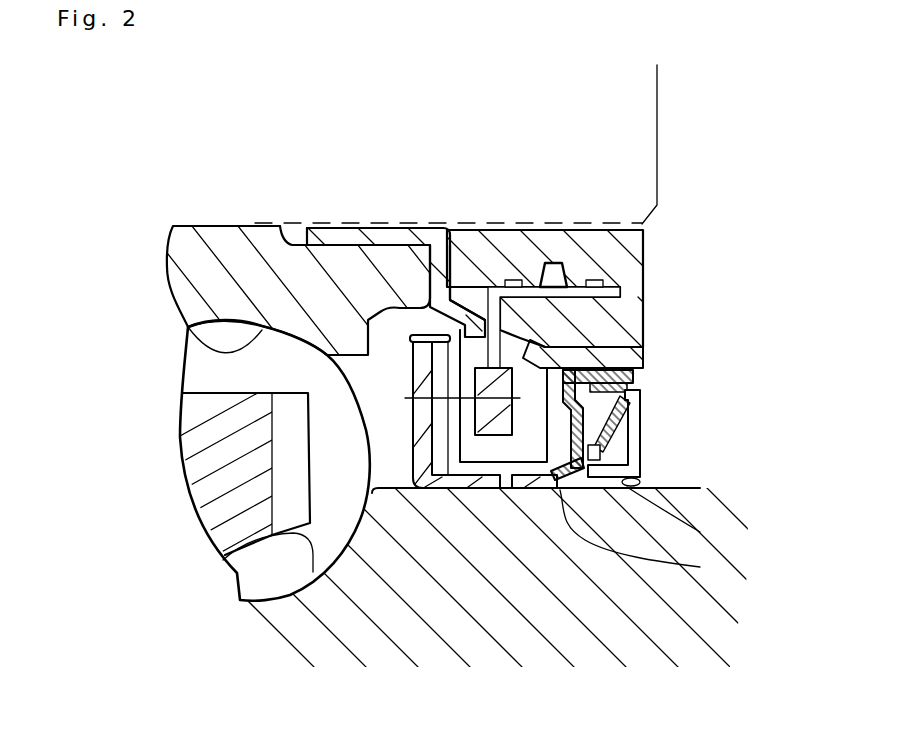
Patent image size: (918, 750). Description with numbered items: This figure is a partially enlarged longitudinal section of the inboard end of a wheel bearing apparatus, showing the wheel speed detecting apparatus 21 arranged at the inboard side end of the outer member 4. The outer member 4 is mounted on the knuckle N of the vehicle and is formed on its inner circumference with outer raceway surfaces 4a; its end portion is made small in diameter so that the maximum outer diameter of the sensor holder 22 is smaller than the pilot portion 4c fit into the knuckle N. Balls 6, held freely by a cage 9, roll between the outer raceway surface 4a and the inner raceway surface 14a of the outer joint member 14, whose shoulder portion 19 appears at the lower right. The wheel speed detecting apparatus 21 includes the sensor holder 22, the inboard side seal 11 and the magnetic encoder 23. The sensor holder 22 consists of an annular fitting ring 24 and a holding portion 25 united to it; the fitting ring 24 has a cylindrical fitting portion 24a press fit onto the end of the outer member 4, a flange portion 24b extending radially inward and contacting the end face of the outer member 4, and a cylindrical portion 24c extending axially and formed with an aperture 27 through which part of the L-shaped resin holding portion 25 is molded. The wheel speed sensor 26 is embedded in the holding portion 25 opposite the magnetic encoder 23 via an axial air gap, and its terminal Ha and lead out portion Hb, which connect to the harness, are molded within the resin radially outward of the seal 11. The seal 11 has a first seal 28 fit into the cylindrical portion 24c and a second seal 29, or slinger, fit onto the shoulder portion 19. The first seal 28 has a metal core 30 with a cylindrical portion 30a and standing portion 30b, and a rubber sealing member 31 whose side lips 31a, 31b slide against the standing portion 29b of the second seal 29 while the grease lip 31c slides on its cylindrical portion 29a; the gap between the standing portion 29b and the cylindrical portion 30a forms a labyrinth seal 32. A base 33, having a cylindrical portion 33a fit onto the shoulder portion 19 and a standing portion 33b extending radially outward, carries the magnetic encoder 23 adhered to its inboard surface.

The outer member 4 is at (305, 246).
The outer raceway surface 4a is at (188, 335).
The pilot portion 4c is at (253, 227).
The rolling element (ball) 6 is at (237, 367).
The cage 9 is at (243, 432).
The inboard side seal 11 is at (701, 385).
The outer joint member 14 is at (328, 638).
The inner raceway surface 14a is at (217, 576).
The shoulder portion 19 is at (580, 585).
The wheel speed detecting apparatus 21 is at (534, 213).
The sensor holder 22 is at (534, 213).
The magnetic encoder 23 is at (512, 428).
The fitting ring 24 is at (527, 243).
The fitting portion 24a is at (325, 227).
The flange portion 24b is at (447, 255).
The cylindrical portion 24c is at (610, 355).
The holding portion 25 is at (600, 245).
The wheel speed sensor 26 is at (446, 418).
The aperture 27 is at (500, 325).
The first seal 28 is at (701, 413).
The second seal (slinger) 29 is at (676, 534).
The cylindrical portion 29a is at (651, 536).
The standing portion 29b is at (685, 516).
The metal core 30 is at (674, 408).
The cylindrical portion 30a is at (600, 378).
The standing portion 30b is at (592, 404).
The sealing member 31 is at (694, 440).
The side lip 31a is at (630, 430).
The side lip 31b is at (620, 442).
The grease lip 31c is at (640, 488).
The labyrinth seal 32 is at (590, 338).
The base 33 is at (505, 536).
The cylindrical portion 33a is at (463, 477).
The standing portion 33b is at (412, 478).
The terminal Ha is at (622, 298).
The lead out portion Hb is at (555, 263).
The knuckle N is at (548, 132).